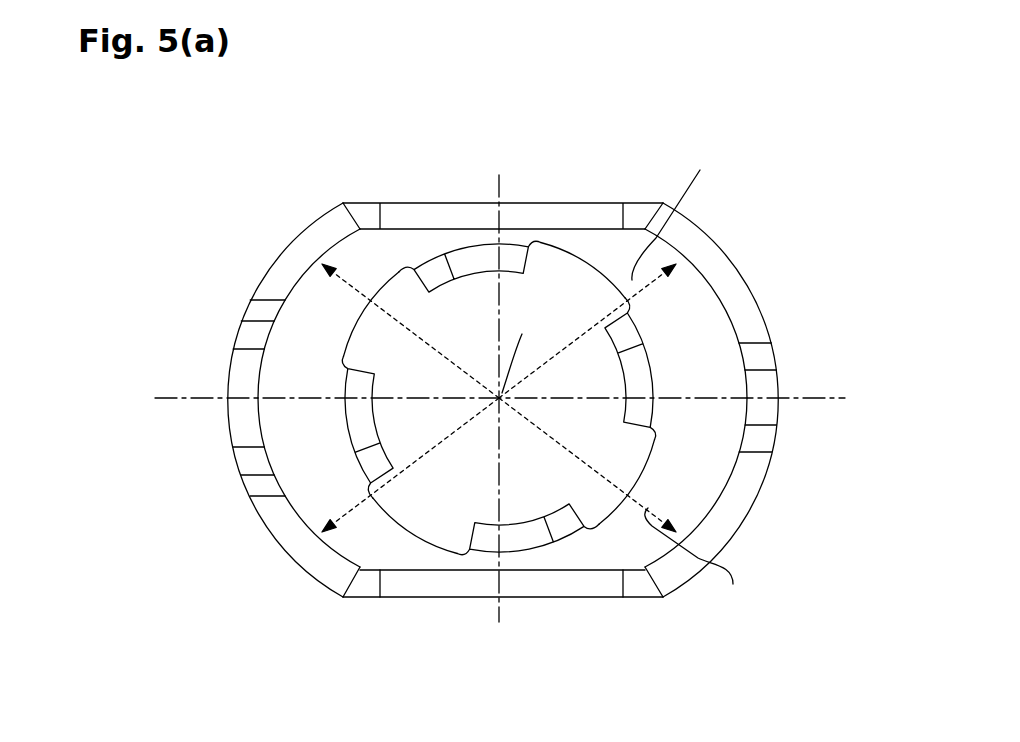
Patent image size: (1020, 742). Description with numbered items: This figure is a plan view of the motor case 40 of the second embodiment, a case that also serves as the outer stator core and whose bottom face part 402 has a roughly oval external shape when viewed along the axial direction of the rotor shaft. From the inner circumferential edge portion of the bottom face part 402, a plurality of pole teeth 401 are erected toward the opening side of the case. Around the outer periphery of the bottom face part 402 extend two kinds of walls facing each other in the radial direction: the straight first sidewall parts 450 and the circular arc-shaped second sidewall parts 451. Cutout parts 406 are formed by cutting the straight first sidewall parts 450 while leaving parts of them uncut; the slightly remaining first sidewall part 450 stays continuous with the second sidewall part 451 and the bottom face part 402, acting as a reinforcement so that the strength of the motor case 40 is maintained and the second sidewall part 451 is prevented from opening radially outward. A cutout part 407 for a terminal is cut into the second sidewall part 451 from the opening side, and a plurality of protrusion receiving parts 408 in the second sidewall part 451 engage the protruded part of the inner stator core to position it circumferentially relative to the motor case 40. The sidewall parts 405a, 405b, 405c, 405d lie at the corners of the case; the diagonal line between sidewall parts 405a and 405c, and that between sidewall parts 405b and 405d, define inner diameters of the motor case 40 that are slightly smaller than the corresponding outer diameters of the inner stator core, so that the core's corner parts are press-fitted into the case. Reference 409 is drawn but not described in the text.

The motor case 40 is at (762, 68).
The pole teeth 401 is at (527, 537).
The bottom face part 402 is at (367, 543).
The sidewall part 405a is at (725, 244).
The sidewall part 405b is at (746, 531).
The sidewall part 405c is at (318, 573).
The sidewall part 405d is at (282, 256).
The cutout part 406 is at (436, 601).
The cutout part for terminal 407 is at (243, 415).
The protrusion receiving part 408 is at (258, 308).
The end portion 409 is at (615, 588).
The first sidewall part 450 is at (640, 214).
The second sidewall part 451 is at (212, 366).